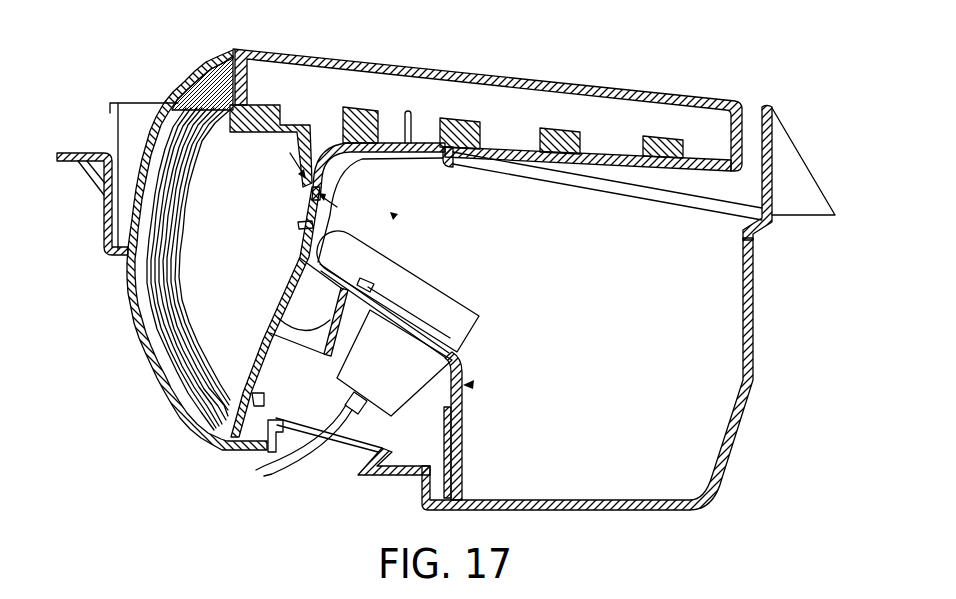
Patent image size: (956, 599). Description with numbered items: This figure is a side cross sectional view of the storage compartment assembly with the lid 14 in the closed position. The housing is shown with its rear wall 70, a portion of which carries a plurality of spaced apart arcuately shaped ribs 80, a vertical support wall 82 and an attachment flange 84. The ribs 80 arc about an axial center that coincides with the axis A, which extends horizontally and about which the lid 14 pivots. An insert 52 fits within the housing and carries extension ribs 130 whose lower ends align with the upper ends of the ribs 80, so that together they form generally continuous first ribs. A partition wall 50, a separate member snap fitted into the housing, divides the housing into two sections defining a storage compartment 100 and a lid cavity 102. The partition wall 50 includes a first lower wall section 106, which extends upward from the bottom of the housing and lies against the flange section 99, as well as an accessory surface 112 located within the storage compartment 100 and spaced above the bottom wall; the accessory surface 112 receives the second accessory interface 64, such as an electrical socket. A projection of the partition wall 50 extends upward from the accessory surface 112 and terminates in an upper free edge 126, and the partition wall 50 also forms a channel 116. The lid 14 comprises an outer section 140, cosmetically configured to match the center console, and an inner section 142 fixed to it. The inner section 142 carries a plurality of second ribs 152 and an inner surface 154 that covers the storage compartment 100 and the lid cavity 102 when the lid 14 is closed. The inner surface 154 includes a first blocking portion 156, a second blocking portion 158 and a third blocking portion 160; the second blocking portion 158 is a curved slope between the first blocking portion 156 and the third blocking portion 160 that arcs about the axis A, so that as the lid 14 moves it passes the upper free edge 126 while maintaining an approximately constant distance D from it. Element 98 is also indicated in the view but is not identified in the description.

The lid 14 is at (670, 48).
The insert 52 is at (138, 120).
The attachment flange 84 is at (70, 152).
The vertical support wall 82 is at (115, 182).
The extension ribs 130 is at (160, 171).
The first blocking portion 156 is at (304, 189).
The second ribs 152 is at (190, 100).
The second blocking portion 158 is at (389, 148).
The distance D is at (311, 180).
The upper free edge 126 is at (328, 183).
The accessory surface 112 is at (320, 253).
The axis A is at (393, 216).
The third blocking portion 160 is at (448, 168).
The inner section 142 is at (567, 133).
The outer section 140 is at (695, 97).
The inner surface 154 is at (615, 163).
The flange 98 is at (793, 190).
The lid cavity 102 is at (257, 272).
The channel 116 is at (333, 320).
The second accessory interface 64 is at (440, 312).
The rear wall 70 is at (131, 317).
The ribs 80 is at (173, 352).
The storage compartment 100 is at (620, 367).
The partition wall 50 is at (472, 384).
The flange section 99 is at (446, 438).
The first lower wall section 106 is at (462, 438).